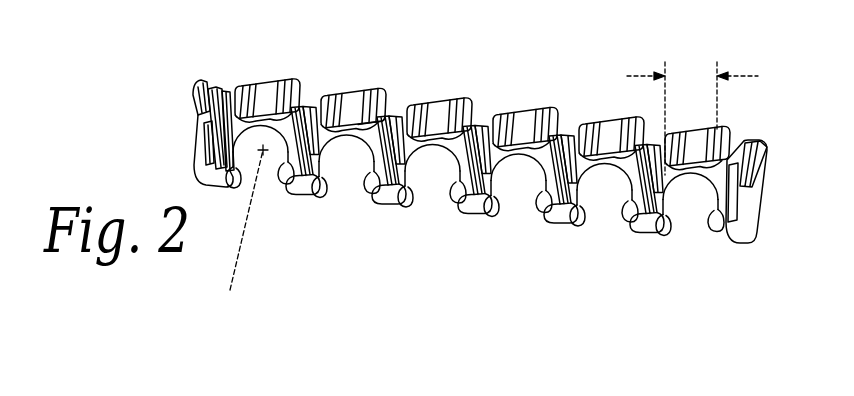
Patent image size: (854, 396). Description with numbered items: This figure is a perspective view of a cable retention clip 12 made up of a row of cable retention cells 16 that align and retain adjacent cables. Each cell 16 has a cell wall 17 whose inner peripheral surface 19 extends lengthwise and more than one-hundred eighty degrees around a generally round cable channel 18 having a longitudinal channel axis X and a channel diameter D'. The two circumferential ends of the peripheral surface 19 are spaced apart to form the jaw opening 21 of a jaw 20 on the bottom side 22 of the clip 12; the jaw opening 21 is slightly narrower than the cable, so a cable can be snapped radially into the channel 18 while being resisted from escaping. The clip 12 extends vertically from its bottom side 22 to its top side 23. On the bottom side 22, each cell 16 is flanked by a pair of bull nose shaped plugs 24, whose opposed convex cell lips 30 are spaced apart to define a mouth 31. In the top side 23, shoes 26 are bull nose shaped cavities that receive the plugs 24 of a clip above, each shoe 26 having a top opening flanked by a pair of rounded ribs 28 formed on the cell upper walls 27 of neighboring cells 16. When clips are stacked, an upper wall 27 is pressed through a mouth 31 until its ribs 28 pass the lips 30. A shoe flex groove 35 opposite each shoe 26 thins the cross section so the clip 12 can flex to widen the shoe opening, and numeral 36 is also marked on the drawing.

The clip 12 is at (172, 121).
The cable retention cell 16 is at (366, 76).
The cell wall 17 is at (381, 113).
The cable channel 18 is at (270, 180).
The inner peripheral surface 19 is at (419, 108).
The jaw 20 is at (593, 218).
The jaw opening 21 is at (520, 200).
The bottom side 22 is at (641, 246).
The top side 23 is at (560, 105).
The plug 24 is at (318, 188).
The shoe 26 is at (310, 103).
The cell upper wall 27 is at (478, 160).
The rib 28 is at (384, 96).
The cell lip 30 is at (323, 188).
The mouth 31 is at (362, 197).
The shoe flex groove 35 is at (304, 187).
The hatched end 36 is at (345, 100).